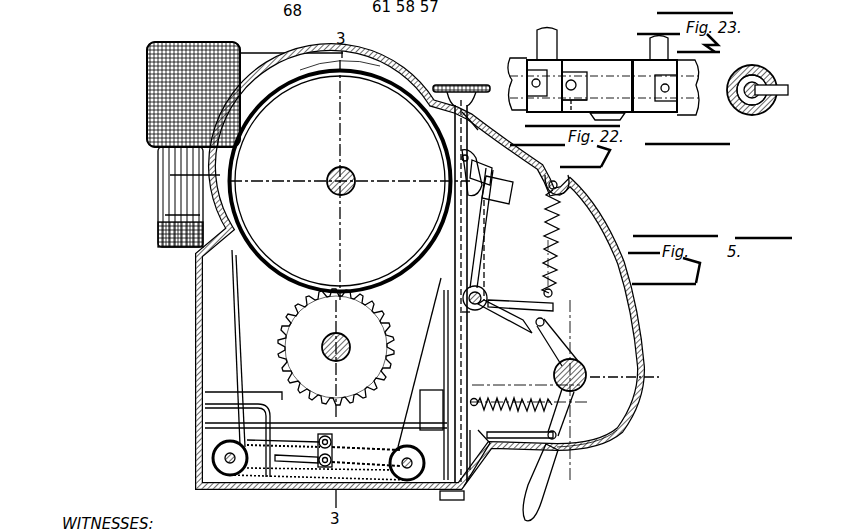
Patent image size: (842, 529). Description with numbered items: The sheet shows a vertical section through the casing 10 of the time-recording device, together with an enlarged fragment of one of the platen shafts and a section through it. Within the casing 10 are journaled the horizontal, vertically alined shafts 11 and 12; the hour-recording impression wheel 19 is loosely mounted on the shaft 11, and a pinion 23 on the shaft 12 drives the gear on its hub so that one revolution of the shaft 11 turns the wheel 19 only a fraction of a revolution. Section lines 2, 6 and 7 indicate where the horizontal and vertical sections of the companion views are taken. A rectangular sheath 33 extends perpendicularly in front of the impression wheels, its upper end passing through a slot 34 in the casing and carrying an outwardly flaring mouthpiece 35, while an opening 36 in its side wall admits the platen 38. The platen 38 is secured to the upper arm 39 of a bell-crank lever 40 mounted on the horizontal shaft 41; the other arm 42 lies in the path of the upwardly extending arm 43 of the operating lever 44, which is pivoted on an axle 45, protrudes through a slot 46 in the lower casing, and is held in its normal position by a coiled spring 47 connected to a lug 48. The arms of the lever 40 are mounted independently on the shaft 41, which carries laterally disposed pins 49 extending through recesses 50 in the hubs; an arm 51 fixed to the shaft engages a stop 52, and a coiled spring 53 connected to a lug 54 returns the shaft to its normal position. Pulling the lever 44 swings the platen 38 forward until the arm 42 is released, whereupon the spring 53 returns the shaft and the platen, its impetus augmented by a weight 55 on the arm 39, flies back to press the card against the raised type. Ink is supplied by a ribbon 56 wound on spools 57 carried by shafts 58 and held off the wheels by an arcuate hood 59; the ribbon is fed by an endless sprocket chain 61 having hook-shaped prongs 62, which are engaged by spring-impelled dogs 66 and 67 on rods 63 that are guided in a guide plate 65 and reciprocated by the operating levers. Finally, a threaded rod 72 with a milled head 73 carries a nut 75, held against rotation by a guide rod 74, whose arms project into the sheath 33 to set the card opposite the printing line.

In FIG. 5, the section line 2 is at (158, 173).
In FIG. 5, the section line 6 is at (553, 178).
In FIG. 5, the section line 7 is at (205, 387).
In FIG. 5, the casing 10 is at (197, 318).
In FIG. 5, the shaft 11 is at (350, 170).
In FIG. 5, the shaft 12 is at (346, 346).
In FIG. 5, the hour-recording wheel 19 is at (350, 180).
In FIG. 5, the pinion 23 is at (336, 347).
In FIG. 22, the pinion 23 is at (571, 72).
In FIG. 5, the sheath 33 is at (468, 232).
In FIG. 5, the slot 34 is at (478, 102).
In FIG. 5, the mouthpiece 35 is at (445, 86).
In FIG. 5, the opening 36 is at (462, 163).
In FIG. 5, the platen 38 is at (484, 162).
In FIG. 5, the arm 39 is at (478, 237).
In FIG. 22, the arm 39 is at (540, 33).
In FIG. 5, the bell-crank lever 40 is at (463, 322).
In FIG. 22, the bell-crank lever 40 is at (605, 90).
In FIG. 5, the shaft 41 is at (482, 290).
In FIG. 22, the shaft 41 is at (578, 84).
In FIG. 23, the shaft 41 is at (755, 80).
In FIG. 5, the arm 42 is at (505, 321).
In FIG. 5, the arm 43 is at (547, 328).
In FIG. 5, the operating lever 44 is at (562, 402).
In FIG. 5, the axle 45 is at (582, 368).
In FIG. 5, the slot 46 is at (595, 440).
In FIG. 5, the coiled spring 47 is at (516, 398).
In FIG. 5, the lug 48 is at (473, 398).
In FIG. 22, the pin 49 is at (535, 78).
In FIG. 23, the pin 49 is at (785, 86).
In FIG. 5, the recess 50 is at (466, 156).
In FIG. 22, the recess 50 is at (582, 88).
In FIG. 23, the recess 50 is at (770, 100).
In FIG. 5, the arm 51 is at (520, 296).
In FIG. 5, the stop 52 is at (565, 268).
In FIG. 5, the coiled spring 53 is at (560, 247).
In FIG. 5, the lug 54 is at (577, 187).
In FIG. 5, the weight 55 is at (497, 190).
In FIG. 5, the ribbon 56 is at (240, 298).
In FIG. 5, the spool 57 is at (217, 486).
In FIG. 5, the shaft 58 is at (222, 459).
In FIG. 5, the arcuate hood 59 is at (384, 64).
In FIG. 5, the sprocket-chain 61 is at (298, 488).
In FIG. 5, the prong 62 is at (258, 487).
In FIG. 5, the rod 63 is at (376, 428).
In FIG. 5, the guide-plate 65 is at (260, 403).
In FIG. 5, the dog 66 is at (290, 440).
In FIG. 5, the dog 67 is at (333, 450).
In FIG. 5, the threaded rod 72 is at (478, 478).
In FIG. 5, the milled head 73 is at (466, 90).
In FIG. 5, the guide-rod 74 is at (440, 326).
In FIG. 5, the nut 75 is at (431, 410).